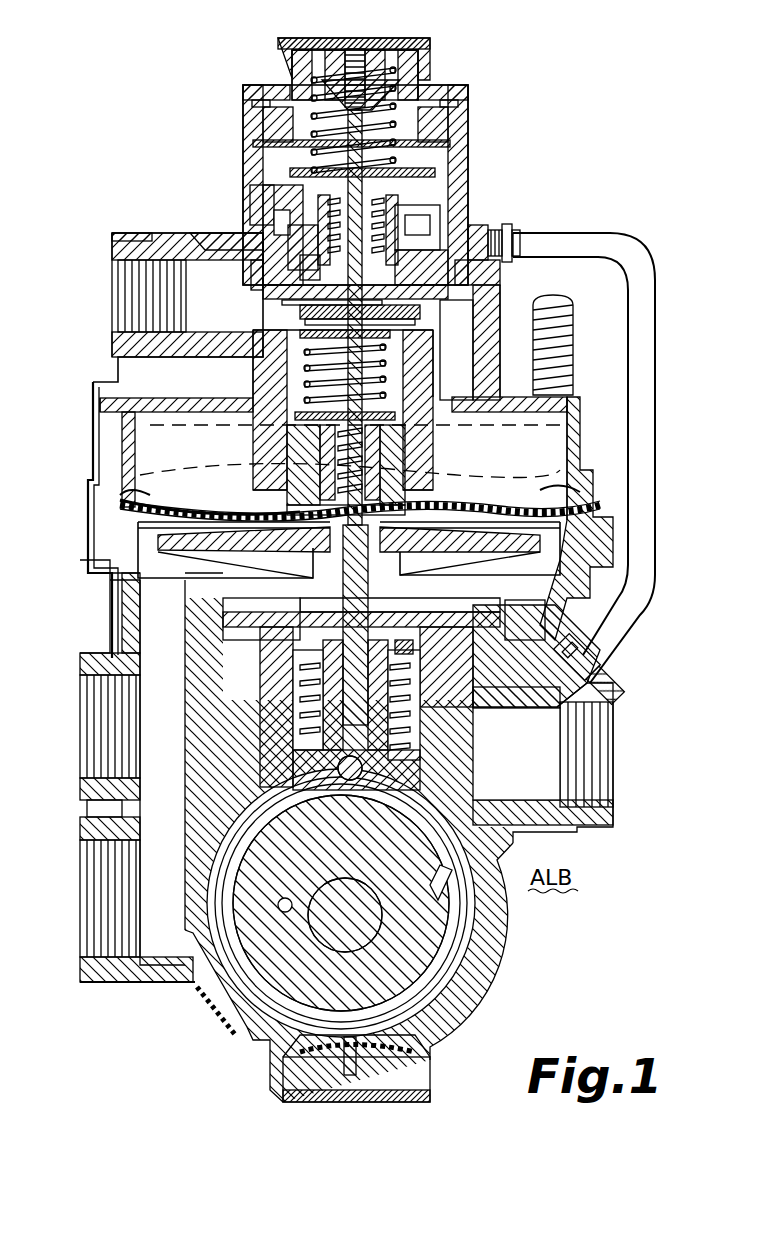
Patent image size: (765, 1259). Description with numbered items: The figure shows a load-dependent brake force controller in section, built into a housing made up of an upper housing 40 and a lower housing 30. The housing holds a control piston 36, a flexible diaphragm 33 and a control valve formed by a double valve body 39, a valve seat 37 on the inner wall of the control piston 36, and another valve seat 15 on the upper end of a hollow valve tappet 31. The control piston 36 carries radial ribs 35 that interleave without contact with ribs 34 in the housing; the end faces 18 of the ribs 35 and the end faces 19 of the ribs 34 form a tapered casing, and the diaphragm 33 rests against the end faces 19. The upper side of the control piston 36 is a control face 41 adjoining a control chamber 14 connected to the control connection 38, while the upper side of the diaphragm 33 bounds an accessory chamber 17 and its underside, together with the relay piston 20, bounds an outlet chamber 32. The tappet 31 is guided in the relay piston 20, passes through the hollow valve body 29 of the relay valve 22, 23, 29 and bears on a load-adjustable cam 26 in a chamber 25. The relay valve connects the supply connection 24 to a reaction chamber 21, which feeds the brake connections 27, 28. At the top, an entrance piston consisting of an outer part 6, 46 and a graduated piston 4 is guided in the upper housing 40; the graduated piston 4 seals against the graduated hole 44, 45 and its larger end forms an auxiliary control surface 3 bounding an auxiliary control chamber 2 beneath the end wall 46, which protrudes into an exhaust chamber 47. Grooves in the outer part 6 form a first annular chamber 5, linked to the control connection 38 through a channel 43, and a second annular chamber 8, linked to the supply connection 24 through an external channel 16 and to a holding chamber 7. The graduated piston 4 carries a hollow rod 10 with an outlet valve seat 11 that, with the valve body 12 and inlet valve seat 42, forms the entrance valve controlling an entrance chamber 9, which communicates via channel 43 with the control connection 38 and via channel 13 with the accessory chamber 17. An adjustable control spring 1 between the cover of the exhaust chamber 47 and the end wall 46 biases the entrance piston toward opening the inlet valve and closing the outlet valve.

The adjustable control spring 1 is at (395, 98).
The auxiliary control chamber 2 is at (405, 218).
The auxiliary control surface 3 is at (395, 193).
The graduated piston 4 is at (285, 184).
The first outer annular chamber 5 is at (262, 198).
The external body of outer part 6 is at (275, 236).
The holding chamber 7 is at (300, 263).
The second inner annular chamber 8 is at (440, 223).
The entrance chamber 9 is at (470, 277).
The hollow valve tappet or rod 10 is at (285, 303).
The outlet valve seat 11 is at (425, 317).
The entrance valve body 12 is at (305, 313).
The channel 13 is at (470, 296).
The control chamber 14 is at (262, 343).
The valve seat 15 is at (385, 429).
The external channel 16 is at (640, 391).
The accessory chamber 17 is at (521, 496).
The end faces of ribs of control piston 18 is at (560, 471).
The end faces of housing ribs 19 is at (128, 492).
The relay piston 20 is at (535, 560).
The reaction chamber 21 is at (535, 629).
The relay valve seat 22 is at (305, 609).
The relay valve element 23 is at (405, 669).
The supply connection 24 is at (602, 787).
The chamber 25 is at (455, 929).
The cam 26 is at (430, 957).
The brake or delivery connection 27 is at (98, 944).
The brake or delivery connection 28 is at (98, 767).
The hollow valve body 29 is at (400, 702).
The lower housing 30 is at (98, 661).
The valve push rod or tappet 31 is at (375, 511).
The outlet chamber 32 is at (140, 539).
The flexible diaphragm 33 is at (125, 507).
The housing ribs 34 is at (125, 469).
The radial ribs of control piston 35 is at (125, 449).
The control piston 36 is at (270, 400).
The valve seat 37 is at (300, 469).
The control connection 38 is at (125, 317).
The double valve body 39 is at (325, 427).
The upper housing 40 is at (148, 241).
The control face 41 is at (420, 339).
The inlet valve seat 42 is at (300, 297).
The channel 43 is at (215, 235).
The graduated hole portion 44 is at (500, 232).
The graduated hole portion 45 is at (252, 266).
The end wall 46 is at (272, 113).
The exhaust chamber 47 is at (325, 95).